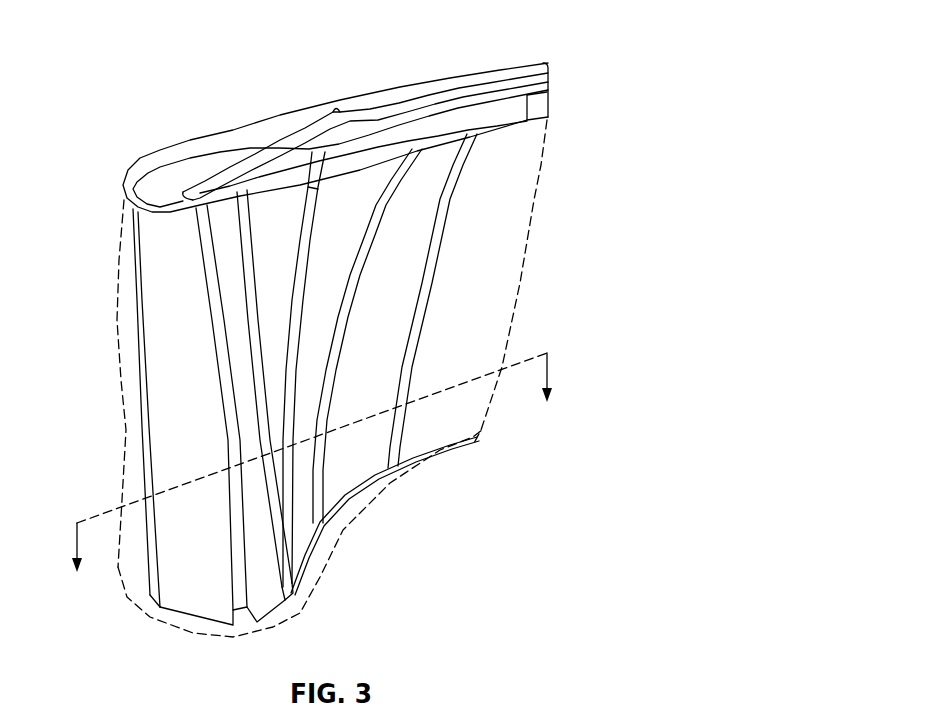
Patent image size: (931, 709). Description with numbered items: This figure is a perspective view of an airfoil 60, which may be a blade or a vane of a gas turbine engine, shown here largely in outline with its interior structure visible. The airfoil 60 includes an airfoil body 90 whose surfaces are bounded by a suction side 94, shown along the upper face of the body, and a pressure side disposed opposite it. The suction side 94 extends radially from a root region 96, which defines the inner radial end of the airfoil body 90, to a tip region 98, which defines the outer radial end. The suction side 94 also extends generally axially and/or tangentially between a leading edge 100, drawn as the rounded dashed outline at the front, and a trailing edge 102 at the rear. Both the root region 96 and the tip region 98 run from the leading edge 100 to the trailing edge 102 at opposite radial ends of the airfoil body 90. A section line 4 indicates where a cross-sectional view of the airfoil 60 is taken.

The section line 4- 4 is at (312, 481).
The airfoil 60 is at (102, 382).
The airfoil body 90 is at (340, 606).
The suction side 94 is at (280, 112).
The root region 96 is at (403, 487).
The tip region 98 is at (406, 74).
The leading edge 100 is at (125, 447).
The trailing edge 102 is at (522, 281).